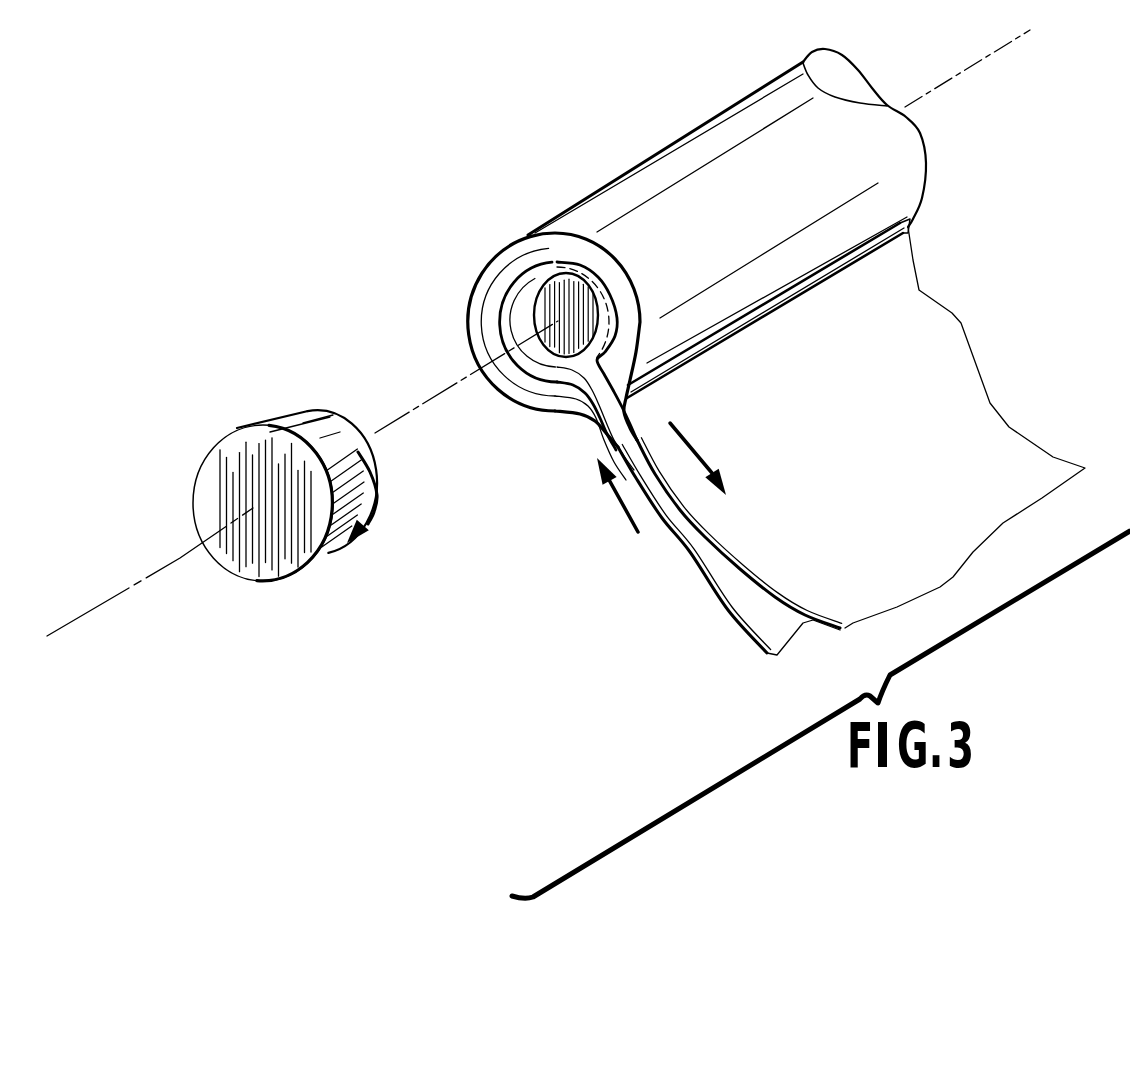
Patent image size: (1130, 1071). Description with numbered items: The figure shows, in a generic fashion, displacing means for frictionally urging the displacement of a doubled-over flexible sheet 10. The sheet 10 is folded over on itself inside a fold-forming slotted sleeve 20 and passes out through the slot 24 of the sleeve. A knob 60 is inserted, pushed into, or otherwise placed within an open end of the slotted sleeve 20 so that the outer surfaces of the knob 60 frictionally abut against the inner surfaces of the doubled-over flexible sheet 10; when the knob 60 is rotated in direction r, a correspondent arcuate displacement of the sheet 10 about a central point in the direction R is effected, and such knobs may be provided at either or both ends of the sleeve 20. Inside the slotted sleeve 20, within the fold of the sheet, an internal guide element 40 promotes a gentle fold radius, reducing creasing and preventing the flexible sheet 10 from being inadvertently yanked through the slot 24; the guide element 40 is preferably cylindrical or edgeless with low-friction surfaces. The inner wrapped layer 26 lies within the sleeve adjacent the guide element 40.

The doubled-over flexible sheet 10 is at (700, 582).
The slotted sleeve 20 is at (789, 190).
The slot 24 is at (597, 430).
The inner wrapped layer 26 is at (575, 408).
The internal guide element 40 is at (535, 298).
The knob 60 is at (313, 496).